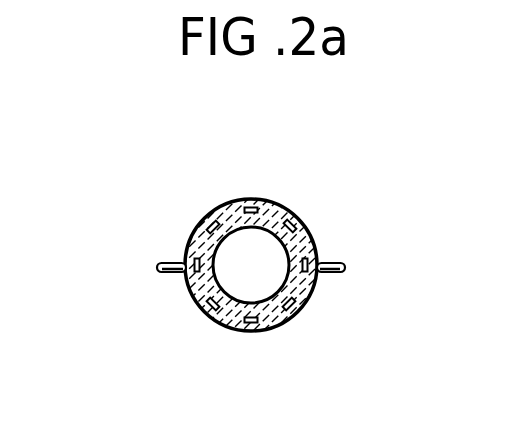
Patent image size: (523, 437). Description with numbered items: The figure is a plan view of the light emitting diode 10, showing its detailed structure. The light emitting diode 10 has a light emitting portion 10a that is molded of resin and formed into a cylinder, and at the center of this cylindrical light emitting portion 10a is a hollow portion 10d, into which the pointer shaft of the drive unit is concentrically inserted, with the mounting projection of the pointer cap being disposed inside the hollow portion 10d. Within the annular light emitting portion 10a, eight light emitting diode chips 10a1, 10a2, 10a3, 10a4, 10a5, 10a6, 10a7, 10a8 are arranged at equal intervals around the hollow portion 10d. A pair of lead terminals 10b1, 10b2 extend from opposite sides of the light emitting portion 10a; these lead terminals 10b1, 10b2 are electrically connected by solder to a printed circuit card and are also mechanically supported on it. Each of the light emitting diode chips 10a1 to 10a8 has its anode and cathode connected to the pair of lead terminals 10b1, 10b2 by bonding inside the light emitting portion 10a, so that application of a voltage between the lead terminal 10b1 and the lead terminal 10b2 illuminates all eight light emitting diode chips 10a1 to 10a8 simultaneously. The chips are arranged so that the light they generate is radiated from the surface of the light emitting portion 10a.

The light emitting diode 10 is at (167, 208).
The light emitting portion 10a is at (275, 203).
The light emitting diode chip 10a1 is at (268, 200).
The light emitting diode chip 10a2 is at (305, 225).
The light emitting diode chip 10a3 is at (318, 256).
The light emitting diode chip 10a4 is at (295, 316).
The light emitting diode chip 10a5 is at (247, 331).
The light emitting diode chip 10a6 is at (210, 316).
The light emitting diode chip 10a7 is at (186, 262).
The light emitting diode chip 10a8 is at (208, 218).
The lead terminal 10b1 is at (168, 273).
The lead terminal 10b2 is at (320, 274).
The hollow portion 10d is at (231, 242).